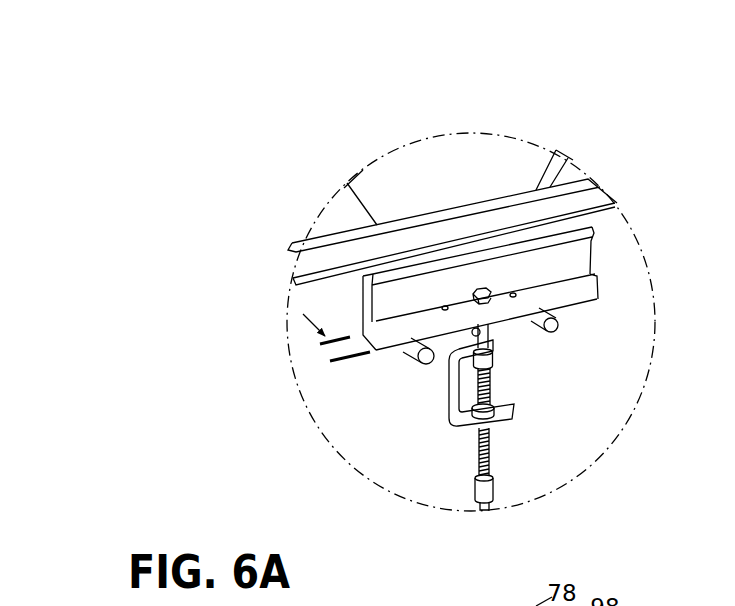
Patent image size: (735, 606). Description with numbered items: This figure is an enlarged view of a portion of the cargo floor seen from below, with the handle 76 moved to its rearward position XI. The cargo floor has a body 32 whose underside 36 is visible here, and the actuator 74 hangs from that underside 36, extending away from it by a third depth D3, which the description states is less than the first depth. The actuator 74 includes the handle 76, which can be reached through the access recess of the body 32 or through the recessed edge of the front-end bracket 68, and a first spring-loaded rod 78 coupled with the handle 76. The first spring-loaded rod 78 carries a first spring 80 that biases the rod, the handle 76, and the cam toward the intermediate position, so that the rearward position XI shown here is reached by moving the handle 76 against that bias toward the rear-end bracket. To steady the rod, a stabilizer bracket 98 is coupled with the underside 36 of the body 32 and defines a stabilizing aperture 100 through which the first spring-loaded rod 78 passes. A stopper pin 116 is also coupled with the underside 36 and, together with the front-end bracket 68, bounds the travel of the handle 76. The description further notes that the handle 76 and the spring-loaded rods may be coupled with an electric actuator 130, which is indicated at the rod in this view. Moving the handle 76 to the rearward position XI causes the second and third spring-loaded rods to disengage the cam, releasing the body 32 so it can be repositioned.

The body 32 is at (318, 296).
The underside 36 is at (373, 444).
The front-end bracket 68 is at (447, 215).
The actuator 74 is at (350, 287).
The handle 76 is at (590, 252).
The first spring-loaded rod 78 is at (505, 507).
The first spring 80 is at (490, 450).
The stabilizer bracket 98 is at (460, 390).
The stabilizing aperture 100 is at (512, 408).
The stopper pin 116 is at (552, 334).
The electric actuator 130 is at (489, 494).
The third depth D3 is at (372, 388).
The rearward position XI is at (616, 274).